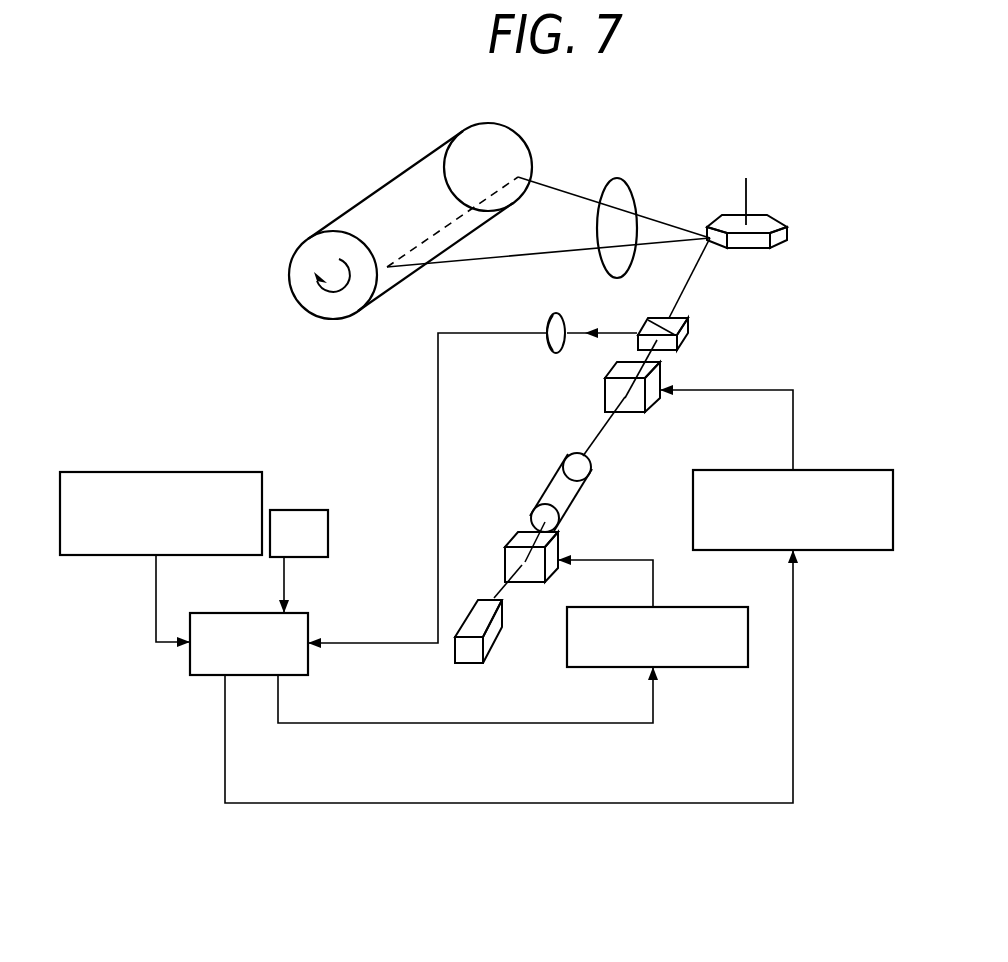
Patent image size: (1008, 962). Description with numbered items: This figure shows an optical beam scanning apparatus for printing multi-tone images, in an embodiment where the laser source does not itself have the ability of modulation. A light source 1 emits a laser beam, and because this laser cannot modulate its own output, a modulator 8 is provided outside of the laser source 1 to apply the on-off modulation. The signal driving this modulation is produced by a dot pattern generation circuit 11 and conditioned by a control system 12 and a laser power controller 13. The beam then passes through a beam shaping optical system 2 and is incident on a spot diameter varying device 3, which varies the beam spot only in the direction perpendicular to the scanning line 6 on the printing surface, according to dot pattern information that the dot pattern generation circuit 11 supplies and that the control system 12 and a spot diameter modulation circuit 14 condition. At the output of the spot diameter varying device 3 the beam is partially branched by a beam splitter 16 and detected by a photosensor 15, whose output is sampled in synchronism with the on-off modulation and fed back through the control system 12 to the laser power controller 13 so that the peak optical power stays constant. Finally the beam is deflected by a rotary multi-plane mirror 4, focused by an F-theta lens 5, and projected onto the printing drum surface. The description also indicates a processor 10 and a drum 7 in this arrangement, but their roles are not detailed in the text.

The light source 1 is at (495, 650).
The beam shaping optical system 2 is at (585, 494).
The spot diameter varying device 3 is at (605, 395).
The rotary multi-plane mirror 4 is at (776, 222).
The F-theta lens 5 is at (628, 182).
The scanning line 6 is at (440, 233).
The photosensitive drum 7 is at (300, 248).
The modulator 8 is at (507, 540).
The CPU 10 is at (318, 510).
The dot pattern generation circuit 11 is at (242, 472).
The control system 12 is at (198, 675).
The laser power controller 13 is at (732, 667).
The spot diameter modulation circuit 14 is at (872, 470).
The photosensor 15 is at (547, 345).
The beam splitter 16 is at (700, 333).